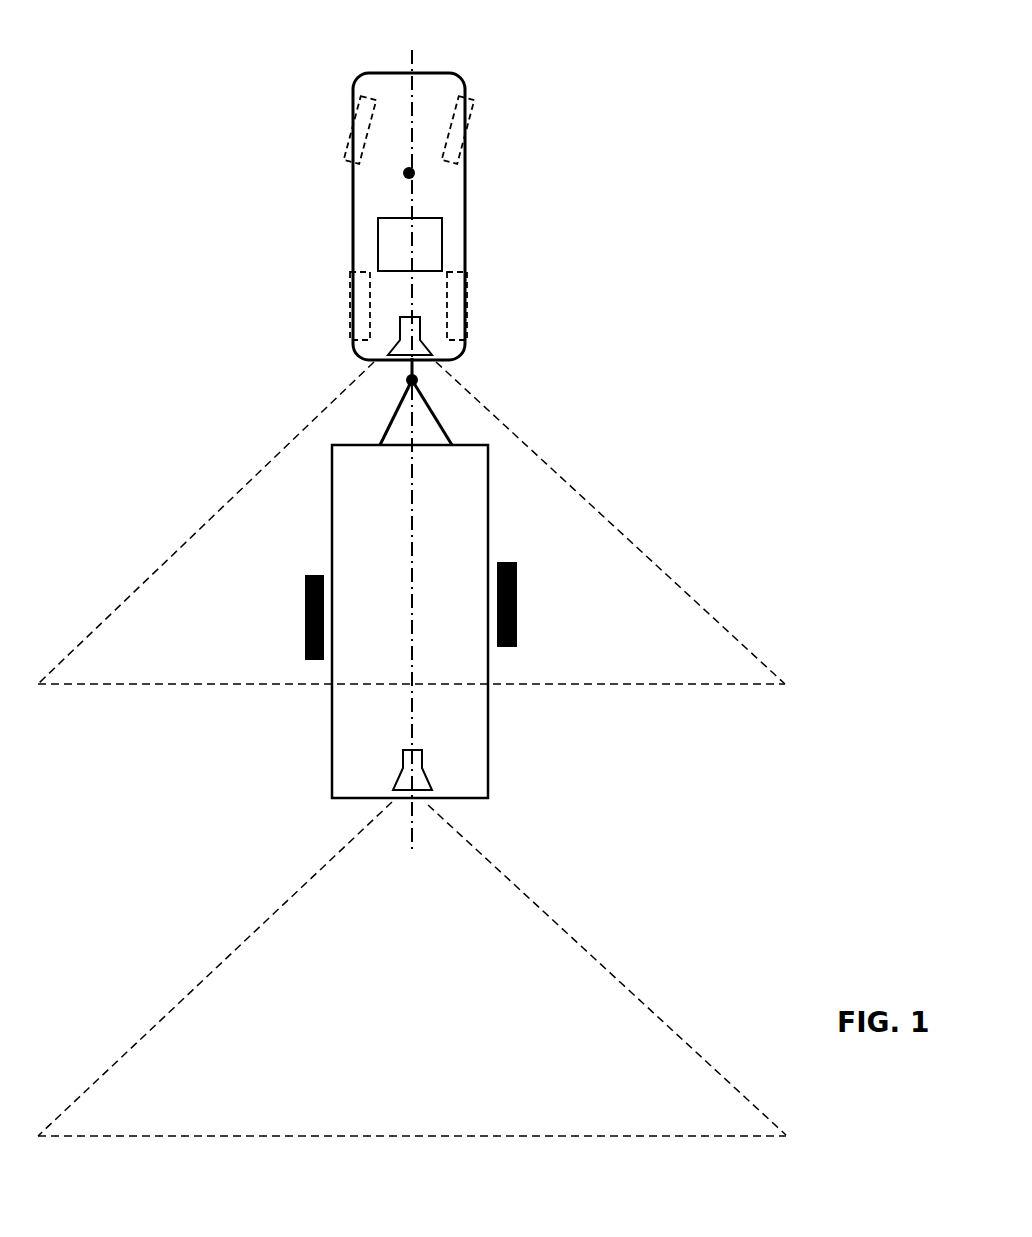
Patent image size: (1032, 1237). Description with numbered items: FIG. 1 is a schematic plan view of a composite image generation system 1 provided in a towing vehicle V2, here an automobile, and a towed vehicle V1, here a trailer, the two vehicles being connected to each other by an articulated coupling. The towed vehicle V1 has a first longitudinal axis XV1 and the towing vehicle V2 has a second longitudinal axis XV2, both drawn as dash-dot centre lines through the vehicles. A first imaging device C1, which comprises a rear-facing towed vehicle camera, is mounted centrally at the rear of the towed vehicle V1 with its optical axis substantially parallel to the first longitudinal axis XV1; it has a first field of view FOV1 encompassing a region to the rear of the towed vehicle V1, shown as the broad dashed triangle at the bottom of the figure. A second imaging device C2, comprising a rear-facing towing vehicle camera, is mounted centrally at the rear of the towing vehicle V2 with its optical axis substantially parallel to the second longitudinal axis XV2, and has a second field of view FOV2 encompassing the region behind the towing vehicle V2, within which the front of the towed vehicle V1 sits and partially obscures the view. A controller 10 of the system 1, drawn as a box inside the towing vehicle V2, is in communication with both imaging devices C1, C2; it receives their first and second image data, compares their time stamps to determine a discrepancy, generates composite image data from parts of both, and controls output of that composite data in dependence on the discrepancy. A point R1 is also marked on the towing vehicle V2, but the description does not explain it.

The composite image generation system 1 is at (771, 186).
The towing vehicle V2 is at (480, 202).
The towed vehicle V1 is at (467, 597).
The controller 10 is at (423, 257).
The reference point of towing vehicle R1 is at (412, 174).
The second imaging device C2 is at (418, 342).
The first imaging device C1 is at (418, 768).
The first longitudinal axis XV1 is at (437, 187).
The second longitudinal axis XV2 is at (436, 629).
The second field of view FOV2 is at (411, 523).
The first field of view FOV1 is at (412, 969).